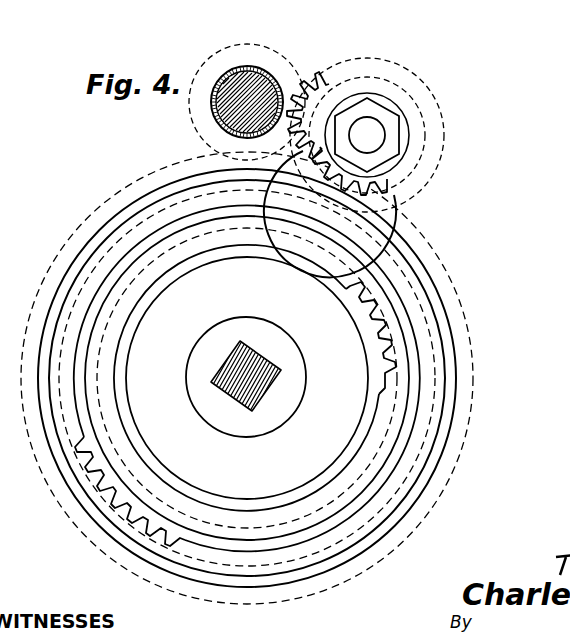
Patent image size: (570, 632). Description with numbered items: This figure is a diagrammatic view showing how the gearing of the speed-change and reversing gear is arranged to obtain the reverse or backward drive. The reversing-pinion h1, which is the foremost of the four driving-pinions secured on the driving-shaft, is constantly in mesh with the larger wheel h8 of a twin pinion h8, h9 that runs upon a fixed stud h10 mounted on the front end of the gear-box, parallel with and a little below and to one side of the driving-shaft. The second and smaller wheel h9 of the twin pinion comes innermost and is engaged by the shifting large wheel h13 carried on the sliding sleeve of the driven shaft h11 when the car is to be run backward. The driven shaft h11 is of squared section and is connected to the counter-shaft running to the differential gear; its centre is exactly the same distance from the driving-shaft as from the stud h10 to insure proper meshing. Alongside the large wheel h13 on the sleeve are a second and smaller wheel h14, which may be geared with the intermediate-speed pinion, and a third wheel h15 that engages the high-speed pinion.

The reversing-pinion h1 is at (296, 80).
The larger wheel of the twin pinion h8 is at (320, 77).
The smaller wheel of the twin pinion h9 is at (383, 188).
The fixed stud h10 is at (374, 141).
The driven shaft h11 is at (284, 376).
The large wheel h13 is at (387, 228).
The second and smaller wheel h14 is at (102, 495).
The third wheel h15 is at (392, 345).